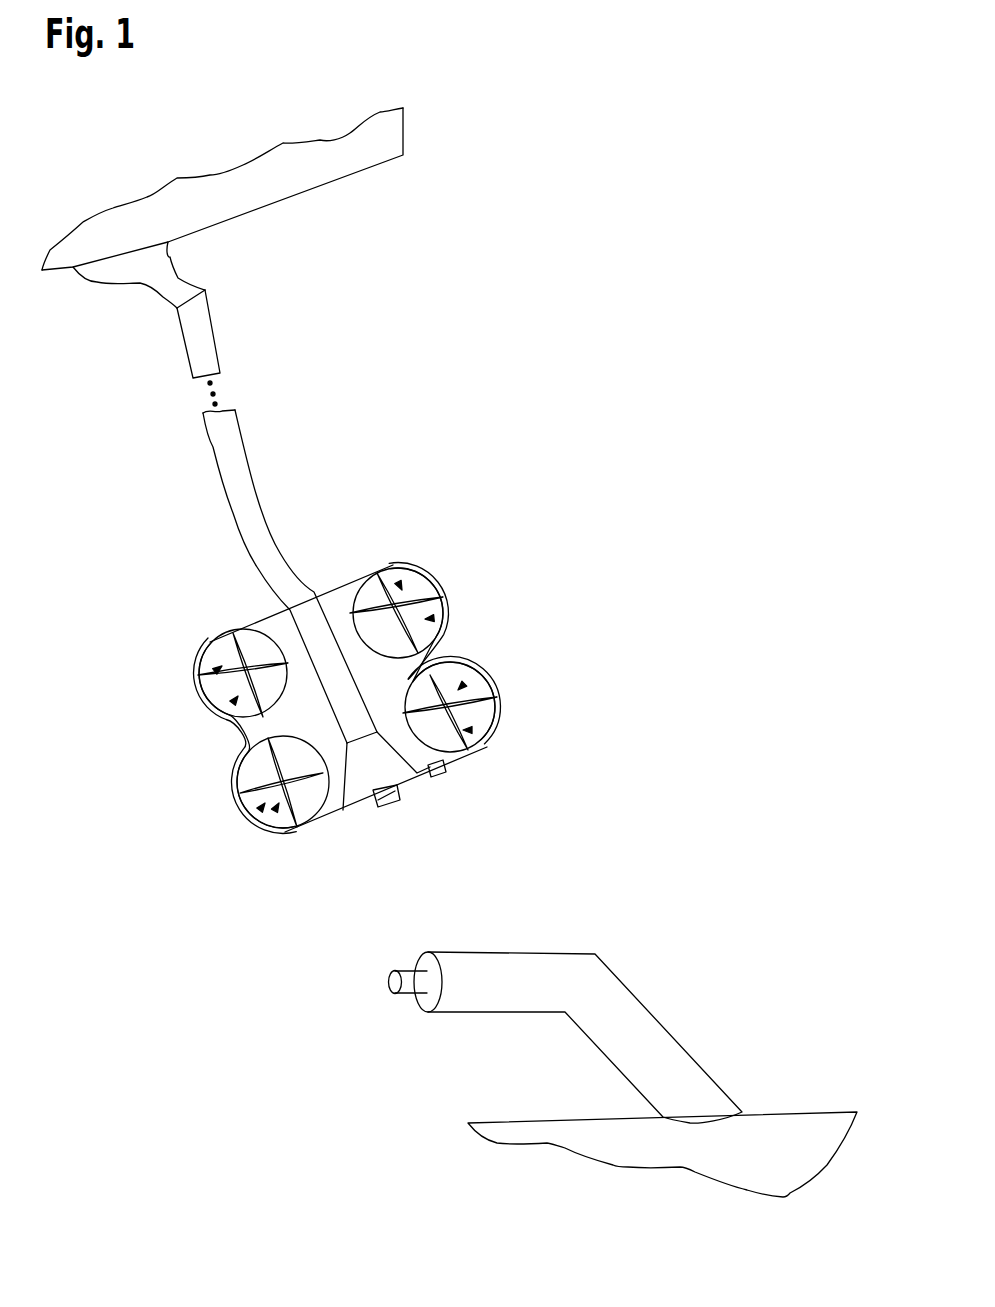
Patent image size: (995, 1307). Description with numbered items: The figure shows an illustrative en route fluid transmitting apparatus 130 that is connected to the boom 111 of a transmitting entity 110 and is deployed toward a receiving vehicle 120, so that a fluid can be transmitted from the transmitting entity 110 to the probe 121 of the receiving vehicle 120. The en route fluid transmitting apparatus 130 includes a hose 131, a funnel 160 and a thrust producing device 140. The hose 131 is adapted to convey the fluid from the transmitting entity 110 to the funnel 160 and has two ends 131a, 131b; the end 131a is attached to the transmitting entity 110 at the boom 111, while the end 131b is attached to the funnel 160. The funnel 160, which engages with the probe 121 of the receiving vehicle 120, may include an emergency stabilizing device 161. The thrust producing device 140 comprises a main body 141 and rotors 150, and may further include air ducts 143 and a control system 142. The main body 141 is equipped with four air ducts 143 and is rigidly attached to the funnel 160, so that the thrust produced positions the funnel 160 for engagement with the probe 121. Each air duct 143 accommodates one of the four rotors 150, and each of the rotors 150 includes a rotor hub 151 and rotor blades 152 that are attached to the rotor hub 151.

The transmitting entity 110 is at (420, 132).
The boom 111 is at (180, 278).
The receiving vehicle 120 is at (790, 1097).
The probe 121 is at (505, 965).
The en route fluid transmitting apparatus 130 is at (495, 290).
The hose 131 is at (236, 430).
The end of hose 131a is at (222, 287).
The end of hose 131b is at (323, 580).
The thrust producing device 140 is at (377, 545).
The main body 141 is at (272, 617).
The control system 142 is at (432, 776).
The air ducts 143 is at (397, 600).
The rotors 150 is at (447, 612).
The rotor hub 151 is at (500, 717).
The rotor blades 152 is at (497, 703).
The funnel 160 is at (378, 765).
The emergency stabilizing device 161 is at (373, 803).